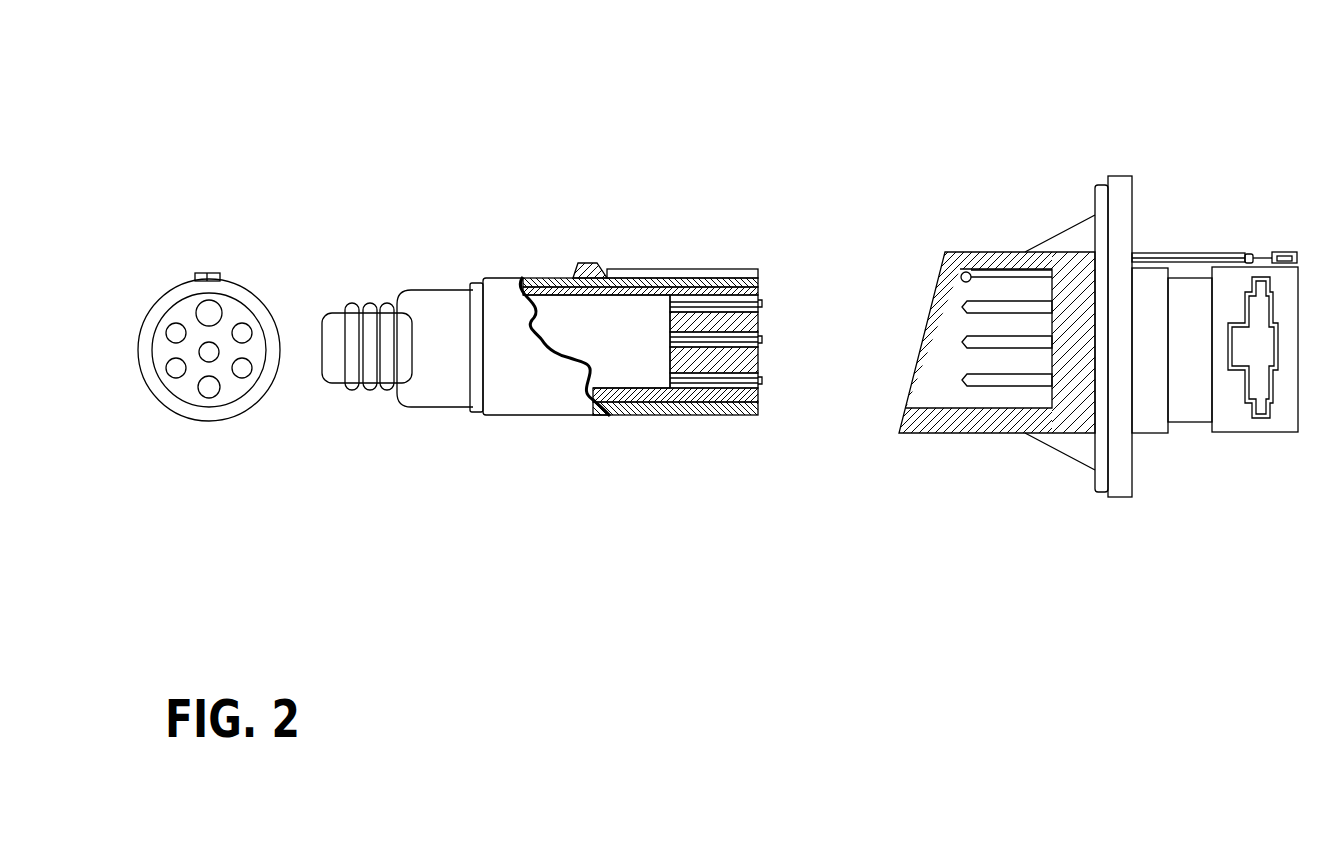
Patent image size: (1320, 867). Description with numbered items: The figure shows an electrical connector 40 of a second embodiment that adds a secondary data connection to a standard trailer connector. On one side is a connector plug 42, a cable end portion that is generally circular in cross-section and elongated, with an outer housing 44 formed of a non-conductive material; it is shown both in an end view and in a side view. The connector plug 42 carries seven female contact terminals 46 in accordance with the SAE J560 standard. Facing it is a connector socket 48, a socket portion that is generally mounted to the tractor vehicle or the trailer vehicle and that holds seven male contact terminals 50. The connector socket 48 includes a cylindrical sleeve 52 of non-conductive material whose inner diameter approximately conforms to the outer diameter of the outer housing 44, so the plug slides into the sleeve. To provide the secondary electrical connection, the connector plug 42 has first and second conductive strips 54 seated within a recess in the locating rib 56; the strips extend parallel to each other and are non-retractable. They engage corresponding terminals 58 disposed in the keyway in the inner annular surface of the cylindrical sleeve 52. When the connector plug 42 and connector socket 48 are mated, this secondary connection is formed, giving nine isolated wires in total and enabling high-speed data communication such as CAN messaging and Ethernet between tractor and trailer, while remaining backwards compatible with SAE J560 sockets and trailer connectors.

The electrical connector 40 is at (658, 78).
The connector plug 42 is at (503, 422).
The outer housing 44 is at (160, 297).
The female contact terminals 46 is at (242, 372).
The connector socket 48 is at (990, 246).
The male contact terminals 50 is at (961, 306).
The cylindrical sleeve 52 is at (953, 433).
The conductive strips 54 is at (640, 269).
The locating rib 56 is at (190, 275).
The terminals 58 is at (960, 274).